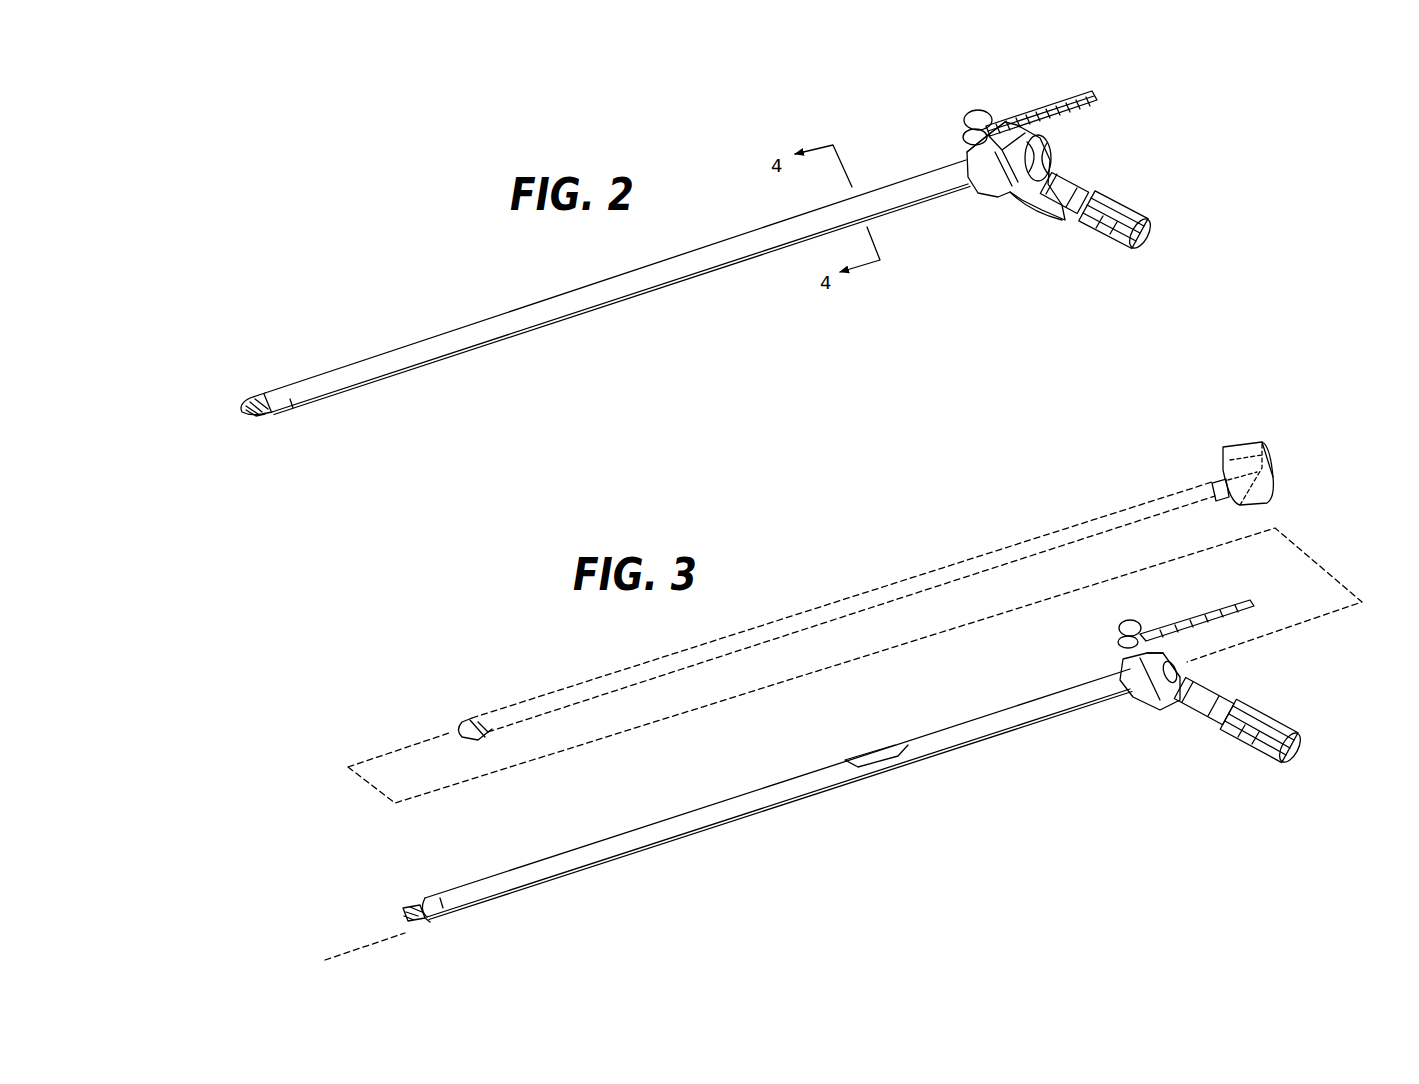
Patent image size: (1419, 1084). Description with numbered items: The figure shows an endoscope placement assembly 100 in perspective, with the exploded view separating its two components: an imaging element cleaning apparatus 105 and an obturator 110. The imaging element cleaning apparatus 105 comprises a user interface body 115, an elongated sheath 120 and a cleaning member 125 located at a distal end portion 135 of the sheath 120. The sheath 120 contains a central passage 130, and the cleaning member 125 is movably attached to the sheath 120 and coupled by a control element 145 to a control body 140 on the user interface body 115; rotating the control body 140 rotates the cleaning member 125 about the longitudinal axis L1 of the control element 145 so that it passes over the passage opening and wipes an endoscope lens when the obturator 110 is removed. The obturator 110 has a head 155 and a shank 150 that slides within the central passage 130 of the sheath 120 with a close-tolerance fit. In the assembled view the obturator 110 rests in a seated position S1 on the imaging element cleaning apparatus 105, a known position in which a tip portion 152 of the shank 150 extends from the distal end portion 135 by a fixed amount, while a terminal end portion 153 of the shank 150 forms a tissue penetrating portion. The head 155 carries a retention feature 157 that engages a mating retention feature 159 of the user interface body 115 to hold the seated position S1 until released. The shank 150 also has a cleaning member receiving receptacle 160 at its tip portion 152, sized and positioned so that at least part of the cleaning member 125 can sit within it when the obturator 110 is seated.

In FIG. 2, the endoscope placement assembly 100 is at (403, 276).
In FIG. 3, the endoscope placement assembly 100 is at (795, 533).
In FIG. 2, the imaging element cleaning apparatus 105 is at (988, 202).
In FIG. 3, the imaging element cleaning apparatus 105 is at (1153, 702).
In FIG. 2, the obturator 110 is at (1069, 152).
In FIG. 3, the obturator 110 is at (1243, 442).
In FIG. 2, the user interface body 115 is at (1058, 207).
In FIG. 3, the user interface body 115 is at (1240, 697).
In FIG. 3, the sheath 120 is at (727, 800).
In FIG. 2, the cleaning member 125 is at (258, 418).
In FIG. 3, the cleaning member 125 is at (408, 908).
In FIG. 3, the central passage 130 is at (900, 752).
In FIG. 2, the distal end portion 135 is at (290, 401).
In FIG. 3, the distal end portion 135 is at (440, 902).
In FIG. 2, the control body 140 is at (1103, 197).
In FIG. 3, the control body 140 is at (1252, 745).
In FIG. 3, the control element 145 is at (437, 920).
In FIG. 2, the shank 150 is at (690, 262).
In FIG. 3, the shank 150 is at (930, 582).
In FIG. 2, the tip portion 152 is at (263, 395).
In FIG. 3, the tip portion 152 is at (493, 716).
In FIG. 2, the terminal end portion 153 is at (243, 410).
In FIG. 3, the terminal end portion 153 is at (466, 730).
In FIG. 2, the head 155 is at (1015, 150).
In FIG. 3, the head 155 is at (1262, 452).
In FIG. 3, the retention feature 157 is at (1216, 496).
In FIG. 3, the mating retention feature 159 is at (1197, 664).
In FIG. 3, the cleaning member receiving receptacle 160 is at (490, 732).
In FIG. 2, the seated position S1 is at (1049, 143).
In FIG. 3, the longitudinal axis L1 is at (373, 942).